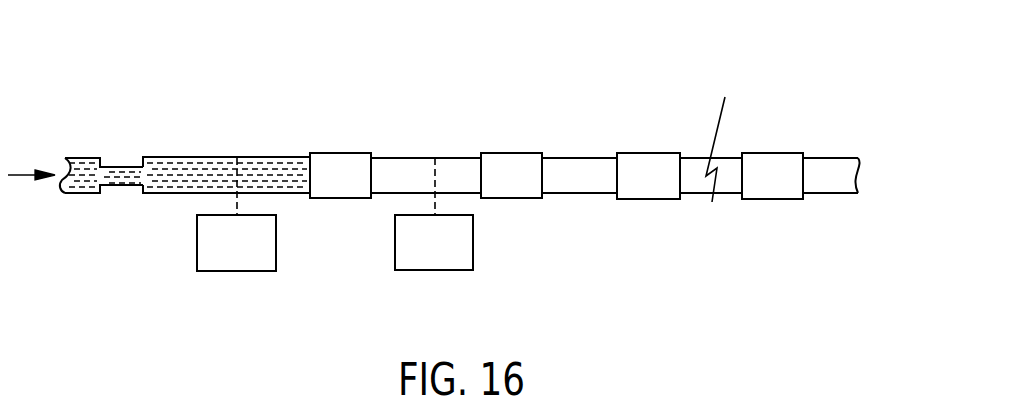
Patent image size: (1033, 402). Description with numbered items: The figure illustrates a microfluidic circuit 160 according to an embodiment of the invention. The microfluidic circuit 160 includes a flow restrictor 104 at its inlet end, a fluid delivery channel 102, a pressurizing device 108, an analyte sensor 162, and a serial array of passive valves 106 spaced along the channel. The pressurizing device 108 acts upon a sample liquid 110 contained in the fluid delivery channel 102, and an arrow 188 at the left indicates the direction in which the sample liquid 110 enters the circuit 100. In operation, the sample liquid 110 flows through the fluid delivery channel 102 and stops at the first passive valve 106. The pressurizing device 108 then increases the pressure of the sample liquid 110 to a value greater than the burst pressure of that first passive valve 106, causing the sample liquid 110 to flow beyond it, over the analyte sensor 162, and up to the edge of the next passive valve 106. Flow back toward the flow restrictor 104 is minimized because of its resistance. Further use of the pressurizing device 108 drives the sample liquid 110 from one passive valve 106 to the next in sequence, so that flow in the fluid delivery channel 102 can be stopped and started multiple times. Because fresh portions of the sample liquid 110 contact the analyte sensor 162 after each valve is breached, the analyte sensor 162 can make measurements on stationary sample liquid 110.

The catheter 100 is at (193, 207).
The fluid delivery channel 102 is at (196, 157).
The flow restrictor 104 is at (118, 166).
The passive valve 106 is at (337, 153).
The pressurizing device 108 is at (276, 243).
The sample liquid 110 is at (265, 172).
The microfluidic circuit 160 is at (628, 83).
The analyte sensor 162 is at (473, 243).
The distal direction arrow 188 is at (42, 170).